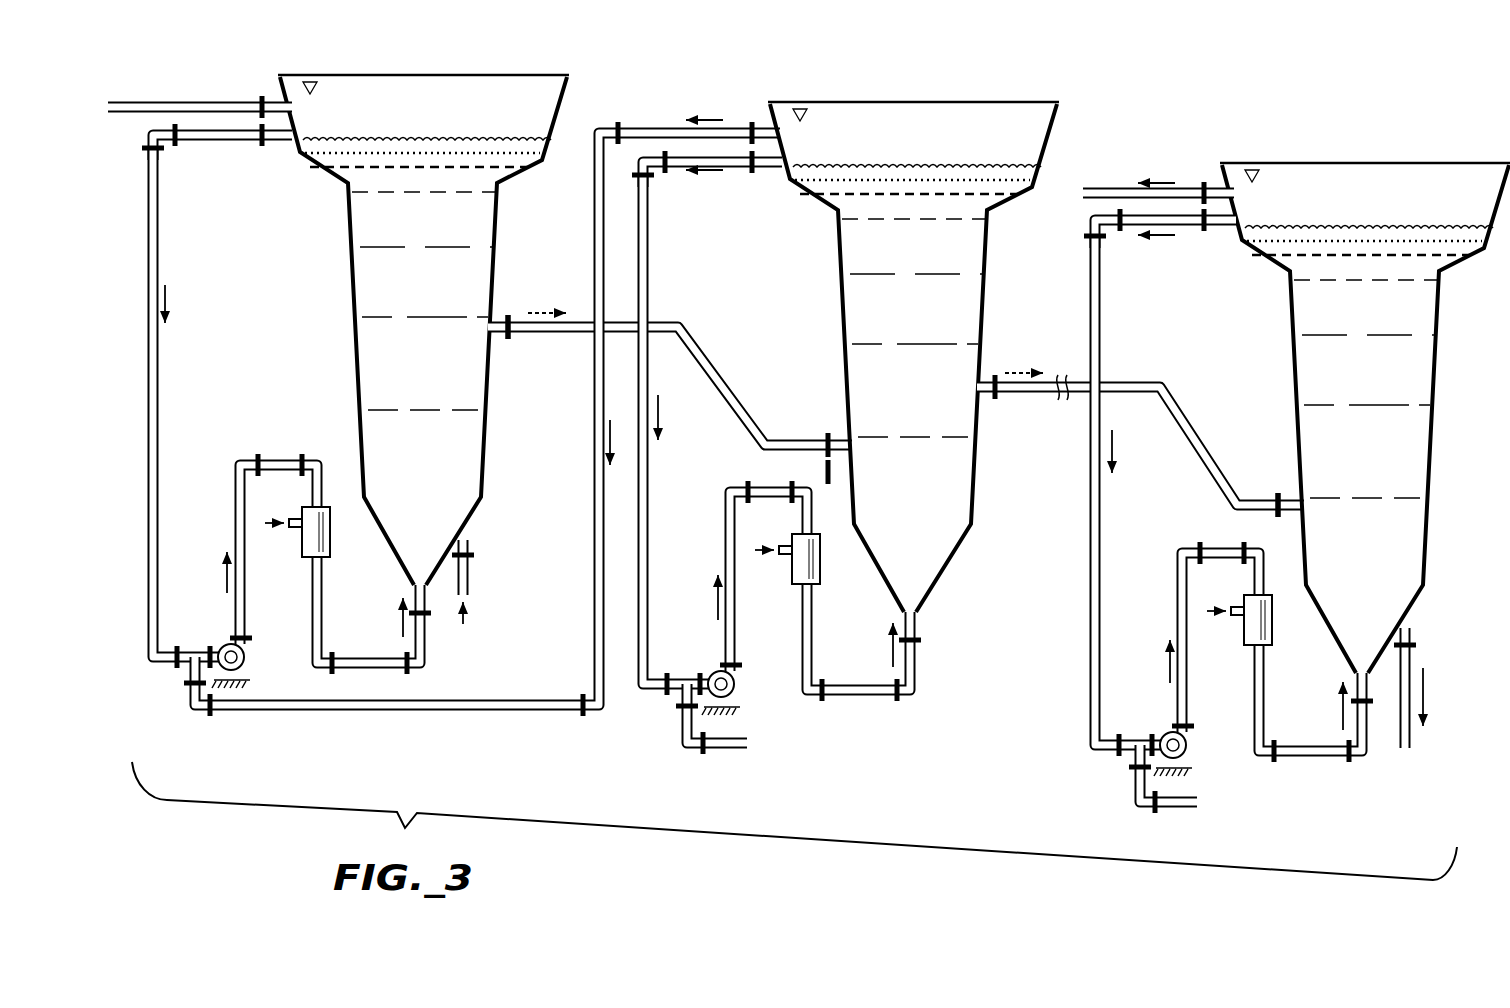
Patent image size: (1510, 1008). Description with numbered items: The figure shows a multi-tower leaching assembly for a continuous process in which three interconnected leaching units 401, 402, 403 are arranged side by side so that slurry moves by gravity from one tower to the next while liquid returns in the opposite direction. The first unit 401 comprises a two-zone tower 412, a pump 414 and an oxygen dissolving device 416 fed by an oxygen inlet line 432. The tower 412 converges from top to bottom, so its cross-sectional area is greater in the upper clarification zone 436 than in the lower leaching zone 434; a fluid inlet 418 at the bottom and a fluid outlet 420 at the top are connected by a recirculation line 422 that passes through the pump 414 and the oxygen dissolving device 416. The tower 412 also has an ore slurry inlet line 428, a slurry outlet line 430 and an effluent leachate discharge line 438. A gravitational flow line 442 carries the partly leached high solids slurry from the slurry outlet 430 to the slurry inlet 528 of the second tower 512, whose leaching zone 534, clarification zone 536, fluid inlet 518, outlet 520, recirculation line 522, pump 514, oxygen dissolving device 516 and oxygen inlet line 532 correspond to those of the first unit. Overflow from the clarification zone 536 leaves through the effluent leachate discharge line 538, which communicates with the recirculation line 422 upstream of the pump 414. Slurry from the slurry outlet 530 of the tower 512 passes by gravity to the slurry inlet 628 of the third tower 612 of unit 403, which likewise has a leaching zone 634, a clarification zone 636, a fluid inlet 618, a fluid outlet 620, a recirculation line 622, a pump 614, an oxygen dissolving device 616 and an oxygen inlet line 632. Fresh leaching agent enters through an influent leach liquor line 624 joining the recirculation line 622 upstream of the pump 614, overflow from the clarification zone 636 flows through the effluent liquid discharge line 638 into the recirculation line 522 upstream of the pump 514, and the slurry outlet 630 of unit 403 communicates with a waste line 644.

The leaching unit 401 is at (447, 740).
The leaching unit 402 is at (928, 788).
The leaching unit 403 is at (1379, 819).
The two-zone tower 412 is at (348, 347).
The pump 414 is at (243, 667).
The oxygen dissolving device 416 is at (332, 553).
The fluid inlet 418 is at (413, 583).
The fluid outlet 420 is at (297, 140).
The recirculation line 422 is at (165, 218).
The ore slurry inlet line 428 is at (470, 545).
The slurry outlet line 430 is at (502, 340).
The oxygen inlet line 432 is at (295, 515).
The leaching zone 434 is at (467, 263).
The clarification zone 436 is at (409, 103).
The effluent leachate discharge line 438 is at (251, 100).
The gravitational flow line 442 is at (678, 318).
The tower 512 is at (895, 357).
The pump 514 is at (756, 701).
The oxygen dissolving device 516 is at (837, 571).
The fluid inlet 518 is at (819, 591).
The outlet 520 is at (715, 179).
The recirculation line 522 is at (681, 435).
The slurry inlet 528 is at (793, 440).
The slurry outlet 530 is at (1140, 445).
The oxygen inlet line 532 is at (727, 540).
The leaching zone 534 is at (986, 358).
The clarification zone 536 is at (917, 116).
The effluent leachate discharge line 538 is at (227, 723).
The tower 612 is at (1347, 418).
The pump 614 is at (1208, 763).
The oxygen dissolving device 616 is at (1290, 633).
The fluid inlet 618 is at (1271, 652).
The fluid outlet 620 is at (1167, 241).
The recirculation line 622 is at (1132, 496).
The influent leach liquor line 624 is at (1190, 797).
The slurry inlet 628 is at (1260, 488).
The slurry outlet 630 is at (1440, 681).
The oxygen inlet line 632 is at (1179, 604).
The leaching zone 634 is at (1438, 419).
The clarification zone 636 is at (1369, 178).
The effluent liquid discharge line 638 is at (737, 736).
The waste line 644 is at (1450, 695).